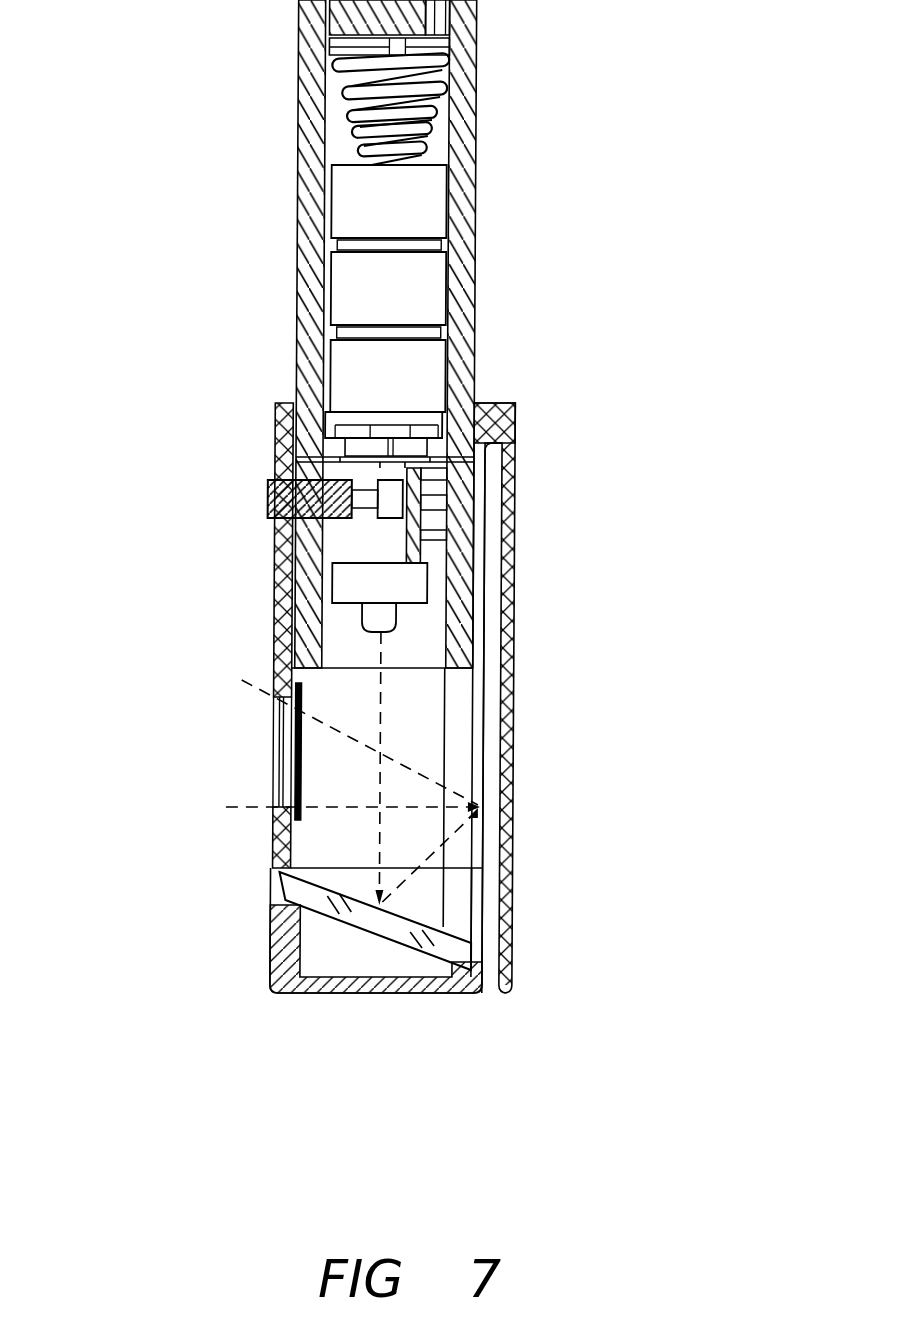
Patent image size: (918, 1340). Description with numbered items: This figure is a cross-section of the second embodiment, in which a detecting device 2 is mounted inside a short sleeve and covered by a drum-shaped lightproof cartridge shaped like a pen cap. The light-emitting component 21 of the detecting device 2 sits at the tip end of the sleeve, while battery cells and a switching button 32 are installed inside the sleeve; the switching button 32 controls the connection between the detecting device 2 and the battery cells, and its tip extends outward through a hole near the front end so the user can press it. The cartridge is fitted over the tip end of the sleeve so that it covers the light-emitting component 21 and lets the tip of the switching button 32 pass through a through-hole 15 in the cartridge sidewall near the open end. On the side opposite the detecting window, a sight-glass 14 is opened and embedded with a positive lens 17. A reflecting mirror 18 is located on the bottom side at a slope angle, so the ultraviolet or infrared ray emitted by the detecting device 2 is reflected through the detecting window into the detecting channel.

The detecting device 2 is at (445, 455).
The sight-glass 14 is at (275, 758).
The through-hole 15 is at (275, 520).
The positive lens 17 is at (275, 693).
The reflecting mirror 18 is at (292, 900).
The light-emitting component 21 is at (383, 617).
The switching button 32 is at (267, 500).